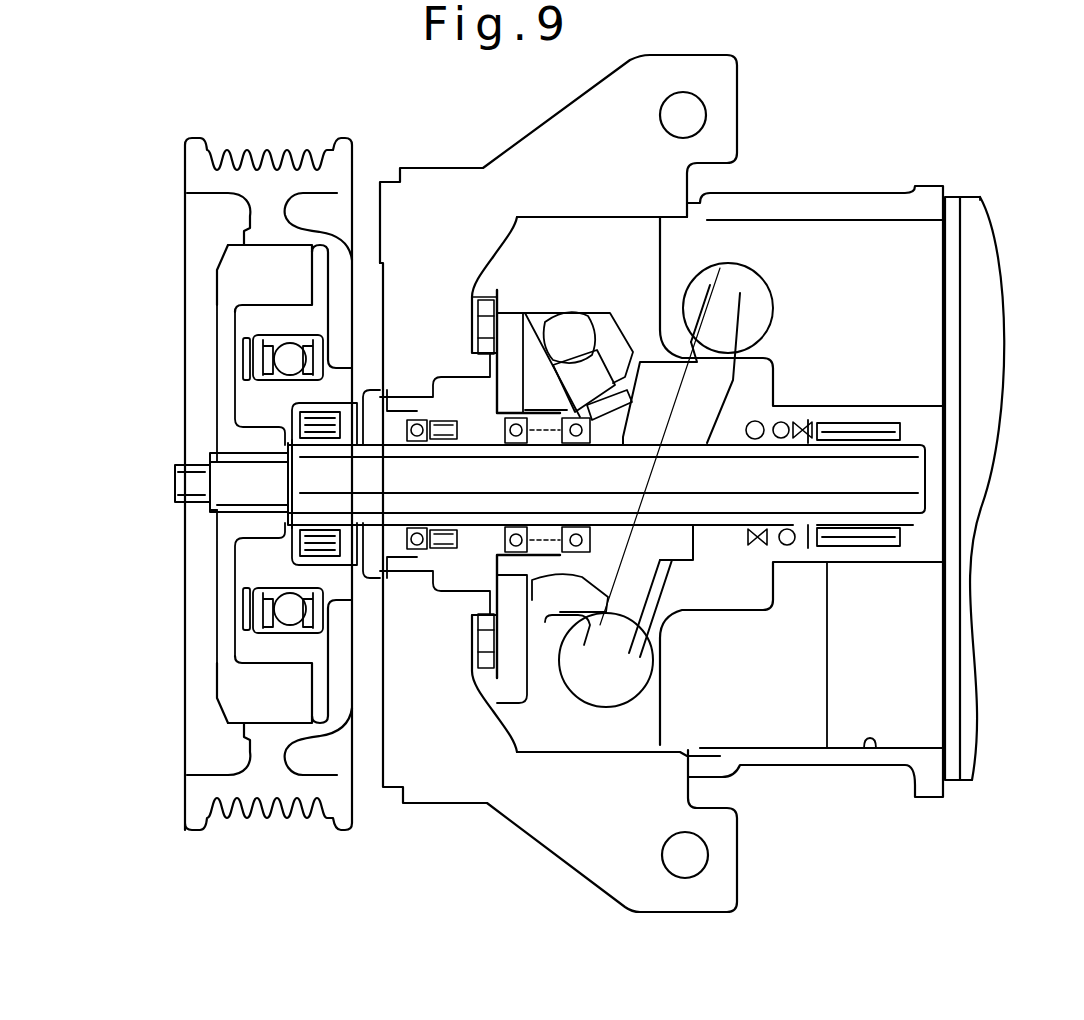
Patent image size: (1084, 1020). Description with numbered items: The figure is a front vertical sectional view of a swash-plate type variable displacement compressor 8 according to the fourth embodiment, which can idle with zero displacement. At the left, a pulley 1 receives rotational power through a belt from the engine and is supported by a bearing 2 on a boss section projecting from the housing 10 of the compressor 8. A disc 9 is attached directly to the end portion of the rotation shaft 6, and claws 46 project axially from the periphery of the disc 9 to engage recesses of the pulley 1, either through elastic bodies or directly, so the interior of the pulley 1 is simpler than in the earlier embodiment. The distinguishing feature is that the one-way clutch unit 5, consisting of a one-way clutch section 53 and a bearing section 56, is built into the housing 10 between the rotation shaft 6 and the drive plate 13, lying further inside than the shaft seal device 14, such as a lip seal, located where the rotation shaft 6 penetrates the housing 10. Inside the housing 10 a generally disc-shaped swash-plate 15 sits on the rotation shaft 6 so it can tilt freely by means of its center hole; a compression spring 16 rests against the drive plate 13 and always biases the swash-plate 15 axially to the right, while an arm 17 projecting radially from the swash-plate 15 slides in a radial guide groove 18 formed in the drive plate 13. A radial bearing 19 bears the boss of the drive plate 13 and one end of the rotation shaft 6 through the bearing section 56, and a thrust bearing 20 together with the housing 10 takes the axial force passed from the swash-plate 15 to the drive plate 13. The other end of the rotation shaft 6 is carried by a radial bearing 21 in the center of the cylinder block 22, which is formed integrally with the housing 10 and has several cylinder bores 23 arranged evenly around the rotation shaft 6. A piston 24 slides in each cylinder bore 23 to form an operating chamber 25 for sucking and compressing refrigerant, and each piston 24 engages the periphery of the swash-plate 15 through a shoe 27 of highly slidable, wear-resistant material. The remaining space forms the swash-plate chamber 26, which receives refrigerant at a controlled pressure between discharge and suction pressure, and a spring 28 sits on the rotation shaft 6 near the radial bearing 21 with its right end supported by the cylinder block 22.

The pulley 1 is at (195, 182).
The bearing 2 is at (290, 360).
The one-way clutch unit 5 is at (340, 877).
The rotation shaft 6 is at (890, 482).
The compressor 8 is at (1012, 200).
The disc 9 is at (228, 626).
The housing 10 is at (445, 190).
The drive plate 13 is at (505, 690).
The shaft seal device 14 is at (225, 537).
The swash-plate 15 is at (730, 297).
The compression spring 16 is at (540, 575).
The arm 17 is at (568, 330).
The radial guide groove 18 is at (620, 340).
The radial bearing 19 is at (463, 548).
The thrust bearing 20 is at (473, 312).
The radial bearing 21 is at (870, 535).
The cylinder block 22 is at (835, 760).
The cylinder bore 23 is at (868, 748).
The piston 24 is at (910, 300).
The operating chamber 25 is at (913, 707).
The swash-plate chamber 26 is at (520, 255).
The shoe 27 is at (568, 640).
The spring 28 is at (757, 421).
The claws 46 is at (275, 272).
The one-way clutch section 53 is at (440, 547).
The bearing section 56 is at (418, 547).